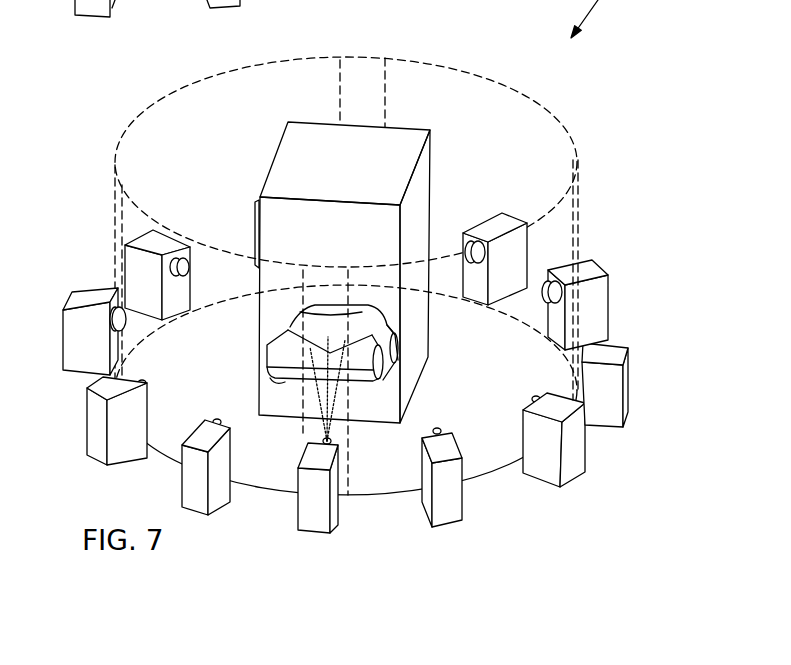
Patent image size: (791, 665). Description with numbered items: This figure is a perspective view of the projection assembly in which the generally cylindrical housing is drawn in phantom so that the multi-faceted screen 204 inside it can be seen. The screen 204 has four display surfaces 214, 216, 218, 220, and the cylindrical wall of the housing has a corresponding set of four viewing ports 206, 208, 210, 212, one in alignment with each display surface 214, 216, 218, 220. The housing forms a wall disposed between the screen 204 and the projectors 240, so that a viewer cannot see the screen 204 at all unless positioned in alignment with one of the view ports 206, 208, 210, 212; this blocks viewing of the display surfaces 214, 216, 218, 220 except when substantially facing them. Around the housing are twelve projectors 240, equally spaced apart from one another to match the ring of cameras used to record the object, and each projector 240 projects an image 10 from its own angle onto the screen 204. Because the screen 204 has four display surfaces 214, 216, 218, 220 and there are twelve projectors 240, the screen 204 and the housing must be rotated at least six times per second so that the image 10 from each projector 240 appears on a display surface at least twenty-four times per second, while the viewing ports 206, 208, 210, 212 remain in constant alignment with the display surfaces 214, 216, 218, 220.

The image 10 is at (345, 438).
The screen 204 is at (284, 229).
The viewing port 206 is at (247, 487).
The viewing port 208 is at (115, 268).
The viewing port 210 is at (346, 200).
The viewing port 212 is at (594, 286).
The display surface 214 is at (346, 409).
The display surface 216 is at (156, 191).
The display surface 218 is at (391, 120).
The display surface 220 is at (446, 276).
The projector 240 is at (326, 454).